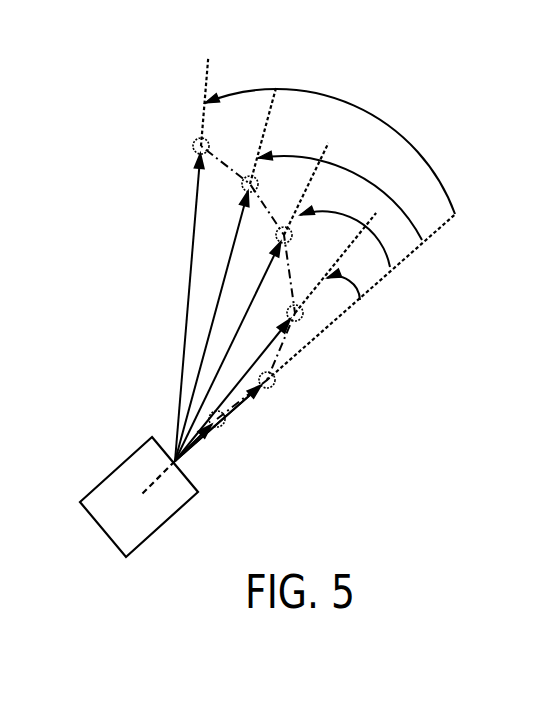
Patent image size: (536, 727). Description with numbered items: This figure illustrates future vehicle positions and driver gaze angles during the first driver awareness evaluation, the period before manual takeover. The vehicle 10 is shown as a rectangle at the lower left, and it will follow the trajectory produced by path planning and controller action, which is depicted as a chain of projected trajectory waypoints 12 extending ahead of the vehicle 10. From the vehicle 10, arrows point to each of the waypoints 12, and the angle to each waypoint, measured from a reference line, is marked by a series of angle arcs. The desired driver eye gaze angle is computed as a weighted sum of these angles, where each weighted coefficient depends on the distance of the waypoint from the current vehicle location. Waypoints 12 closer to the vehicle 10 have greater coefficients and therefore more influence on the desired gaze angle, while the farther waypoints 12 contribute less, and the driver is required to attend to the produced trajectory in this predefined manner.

The vehicle 10 is at (140, 515).
The projected trajectory waypoints 12 is at (193, 140).